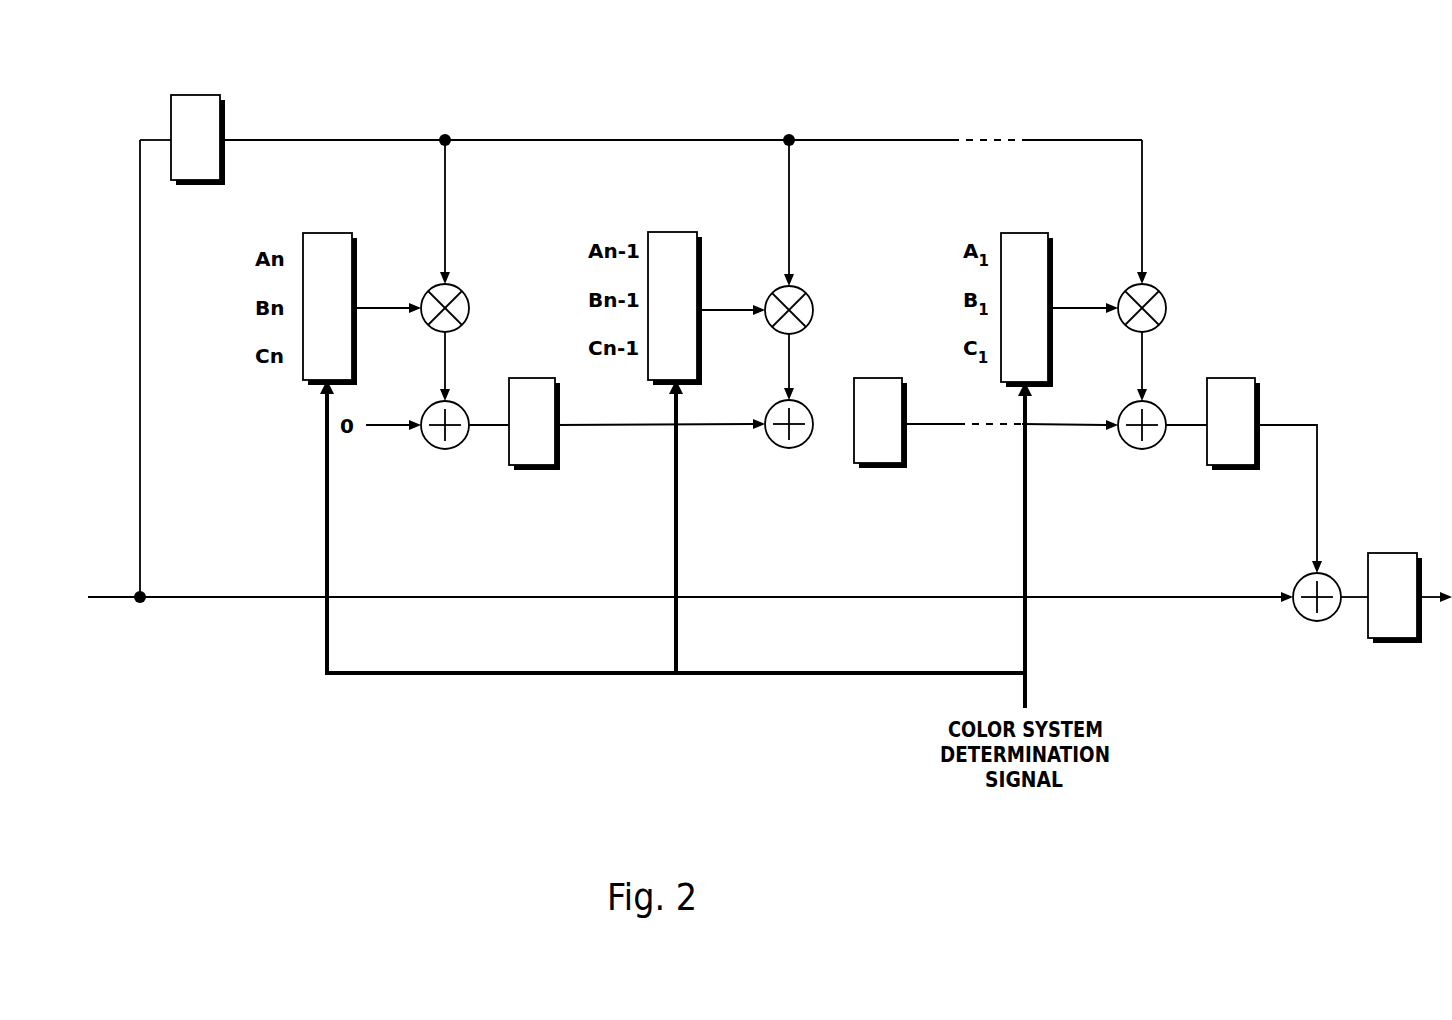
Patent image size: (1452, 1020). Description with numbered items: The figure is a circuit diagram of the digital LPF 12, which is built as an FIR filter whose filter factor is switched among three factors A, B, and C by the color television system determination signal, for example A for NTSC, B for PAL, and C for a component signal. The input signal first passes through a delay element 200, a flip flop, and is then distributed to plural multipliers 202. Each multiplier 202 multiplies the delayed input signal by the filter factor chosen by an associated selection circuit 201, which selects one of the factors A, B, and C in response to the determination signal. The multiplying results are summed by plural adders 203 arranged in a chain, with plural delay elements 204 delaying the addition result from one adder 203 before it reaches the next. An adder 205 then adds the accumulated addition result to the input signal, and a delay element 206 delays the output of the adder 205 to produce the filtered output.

The digital LPF 12 is at (1312, 82).
The delay element 200 is at (204, 95).
The selection circuit 201 is at (327, 233).
The multiplier 202 is at (458, 288).
The adder 203 is at (457, 404).
The delay element 204 is at (537, 378).
The adder 205 is at (1322, 622).
The delay element 206 is at (1390, 553).